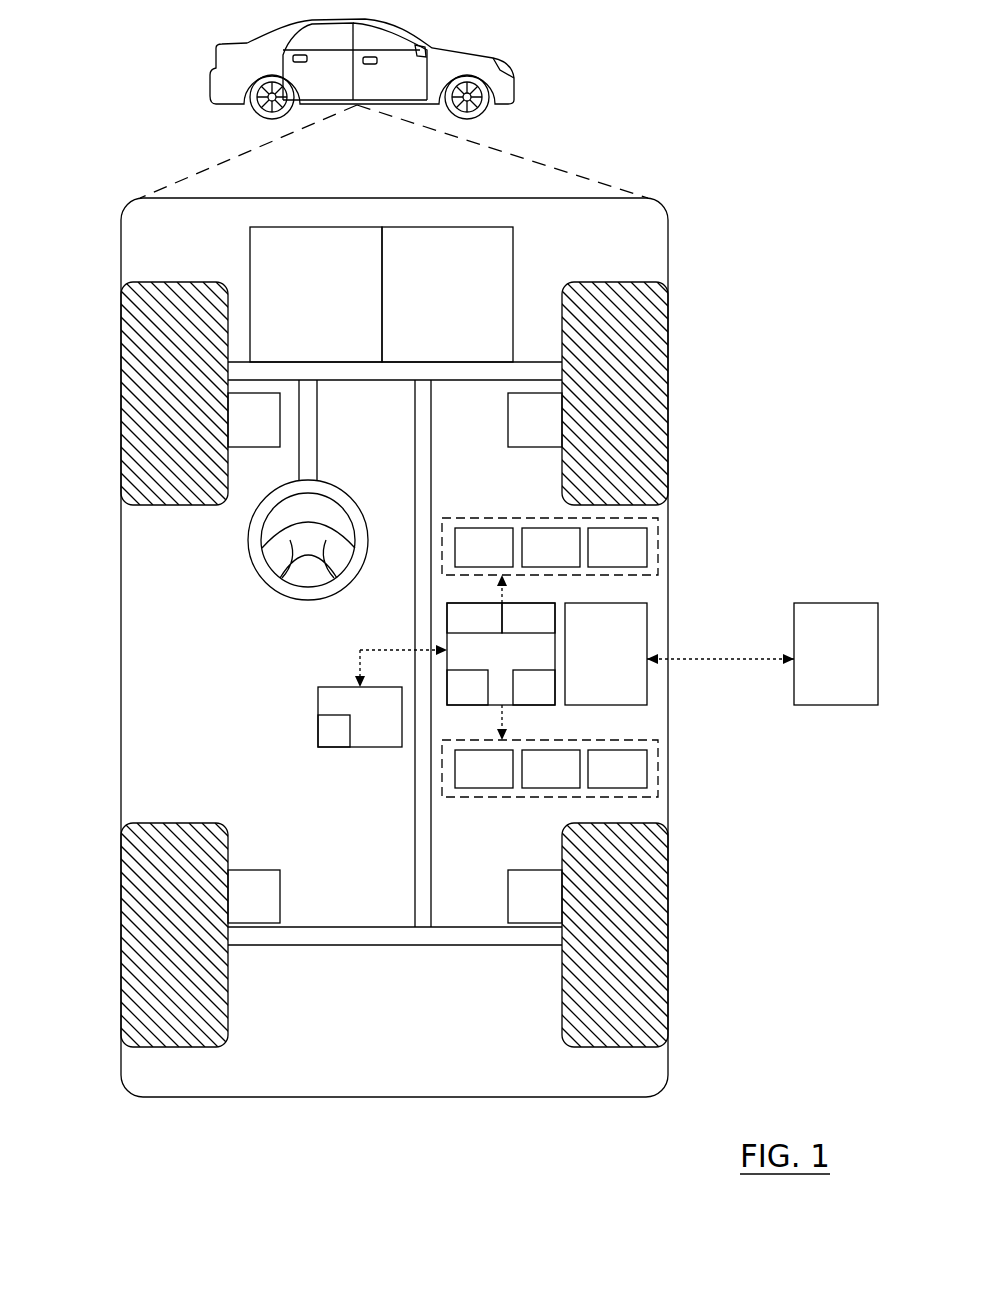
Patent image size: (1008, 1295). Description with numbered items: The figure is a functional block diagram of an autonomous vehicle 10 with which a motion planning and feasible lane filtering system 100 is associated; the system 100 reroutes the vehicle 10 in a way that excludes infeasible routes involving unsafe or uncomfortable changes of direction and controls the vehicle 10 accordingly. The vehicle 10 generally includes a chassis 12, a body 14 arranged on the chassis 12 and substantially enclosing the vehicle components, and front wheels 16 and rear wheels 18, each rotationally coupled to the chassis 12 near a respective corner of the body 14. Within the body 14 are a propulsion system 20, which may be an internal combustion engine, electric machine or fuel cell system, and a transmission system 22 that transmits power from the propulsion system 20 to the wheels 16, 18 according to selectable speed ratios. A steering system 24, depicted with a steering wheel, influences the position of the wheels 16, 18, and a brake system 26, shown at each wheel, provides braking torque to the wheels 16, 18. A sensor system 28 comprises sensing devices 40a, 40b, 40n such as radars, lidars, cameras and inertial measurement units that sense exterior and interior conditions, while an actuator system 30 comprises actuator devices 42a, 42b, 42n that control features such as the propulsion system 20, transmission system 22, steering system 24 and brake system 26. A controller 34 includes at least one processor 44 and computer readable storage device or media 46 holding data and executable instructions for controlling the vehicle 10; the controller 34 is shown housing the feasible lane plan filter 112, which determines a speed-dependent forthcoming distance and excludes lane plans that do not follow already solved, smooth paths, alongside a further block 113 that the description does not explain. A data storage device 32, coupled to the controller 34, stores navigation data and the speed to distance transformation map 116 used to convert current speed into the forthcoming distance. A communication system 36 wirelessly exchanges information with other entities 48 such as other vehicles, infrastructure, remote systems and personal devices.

The autonomous vehicle 10 is at (215, 70).
The motion planning and feasible lane filtering system 100 is at (618, 162).
The chassis 12 is at (413, 857).
The body 14 is at (120, 640).
The front wheels 16 is at (140, 280).
The rear wheels 18 is at (185, 1048).
The propulsion system 20 is at (301, 309).
The transmission system 22 is at (432, 309).
The steering system 24 is at (333, 414).
The brake system 26 is at (241, 434).
The sensor system 28 is at (550, 509).
The actuator system 30 is at (550, 817).
The data storage device 32 is at (307, 717).
The controller 34 is at (501, 654).
The communication system 36 is at (593, 666).
The sensing device 40a is at (465, 561).
The sensing device 40b is at (532, 561).
The sensing device 40n is at (598, 561).
The actuator device 42a is at (465, 783).
The actuator device 42b is at (532, 783).
The actuator device 42n is at (598, 783).
The processor 44 is at (455, 701).
The computer readable storage device or media 46 is at (522, 701).
The other entities 48 is at (823, 654).
The feasible lane plan filter 112 is at (474, 618).
The sub-module 113 is at (528, 618).
The speed to distance transformation map 116 is at (328, 733).